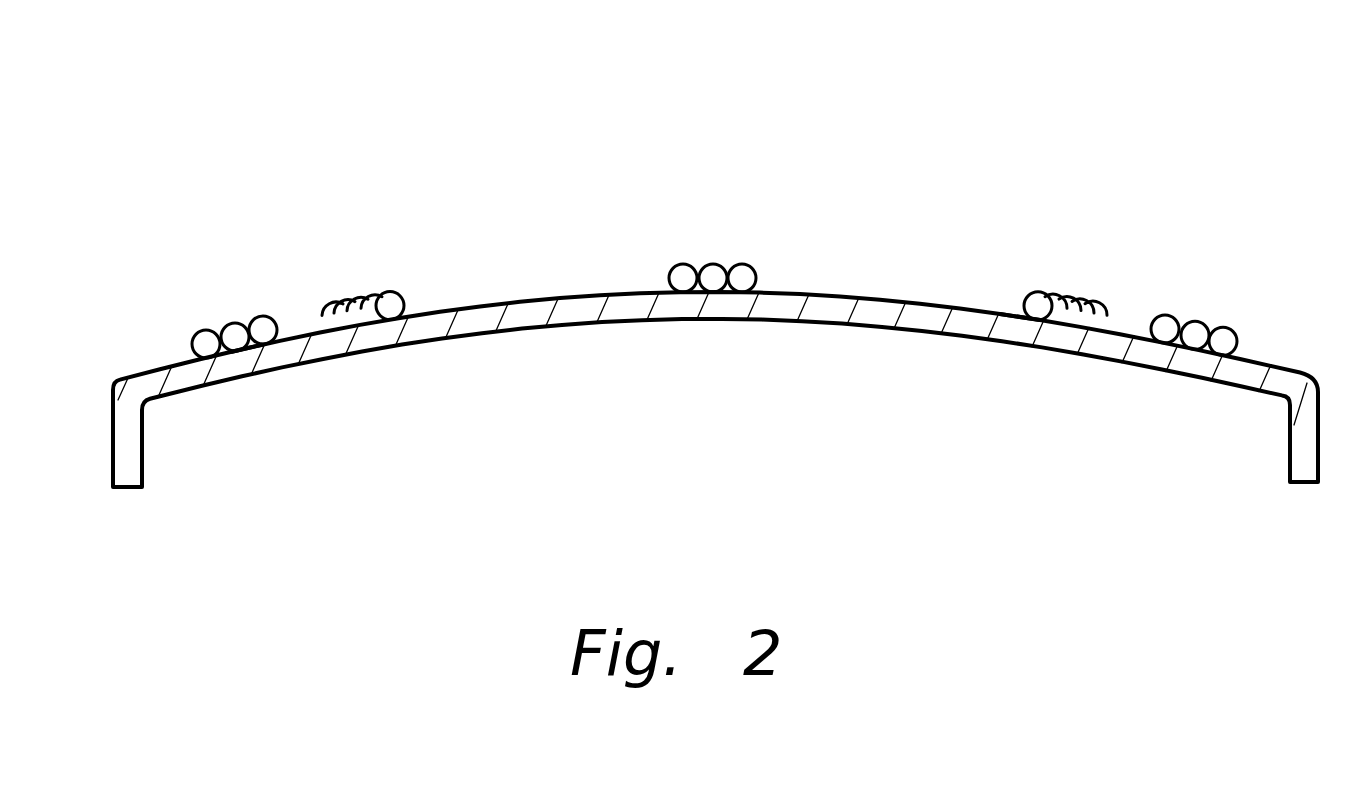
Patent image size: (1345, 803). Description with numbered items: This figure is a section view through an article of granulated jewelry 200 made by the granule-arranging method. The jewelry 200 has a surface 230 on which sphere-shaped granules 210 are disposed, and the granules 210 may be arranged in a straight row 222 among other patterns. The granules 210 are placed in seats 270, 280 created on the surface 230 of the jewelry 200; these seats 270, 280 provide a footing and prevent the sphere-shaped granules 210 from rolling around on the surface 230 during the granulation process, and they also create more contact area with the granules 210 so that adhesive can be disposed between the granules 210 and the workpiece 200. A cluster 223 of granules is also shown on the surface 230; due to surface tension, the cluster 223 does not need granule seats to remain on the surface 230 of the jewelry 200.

The article of granulated jewelry 200 is at (1188, 140).
The surface 230 is at (130, 346).
The straight row 222 is at (226, 296).
The granules 210 is at (403, 292).
The cluster 223 is at (742, 216).
The seat 280 is at (247, 353).
The seat 270 is at (1022, 325).